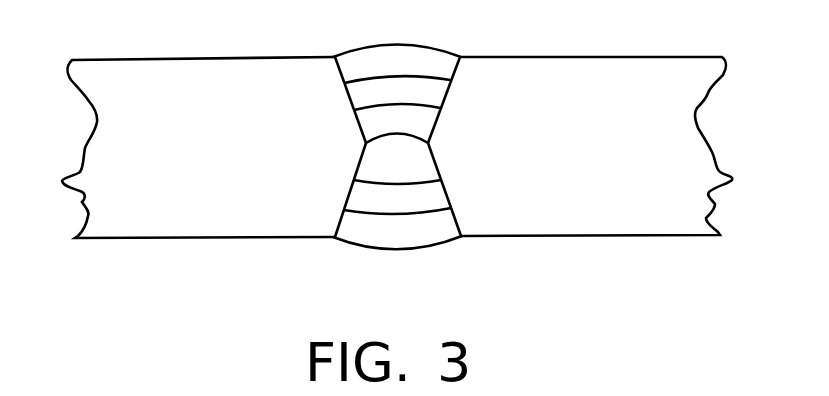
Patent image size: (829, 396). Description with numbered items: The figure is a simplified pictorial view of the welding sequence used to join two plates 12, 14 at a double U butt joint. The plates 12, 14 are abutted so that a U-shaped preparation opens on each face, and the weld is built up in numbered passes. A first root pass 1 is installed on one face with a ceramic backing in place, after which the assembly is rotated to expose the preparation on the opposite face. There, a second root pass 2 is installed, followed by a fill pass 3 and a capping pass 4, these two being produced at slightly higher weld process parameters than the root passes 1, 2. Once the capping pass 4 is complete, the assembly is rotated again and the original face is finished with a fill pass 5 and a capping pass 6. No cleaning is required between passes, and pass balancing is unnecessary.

The plate 12 is at (223, 75).
The plate 14 is at (563, 73).
The first root pass 1 is at (397, 124).
The second root pass 2 is at (397, 163).
The fill pass 3 is at (397, 197).
The capping pass 4 is at (397, 228).
The fill pass 5 is at (397, 94).
The capping pass 6 is at (397, 64).